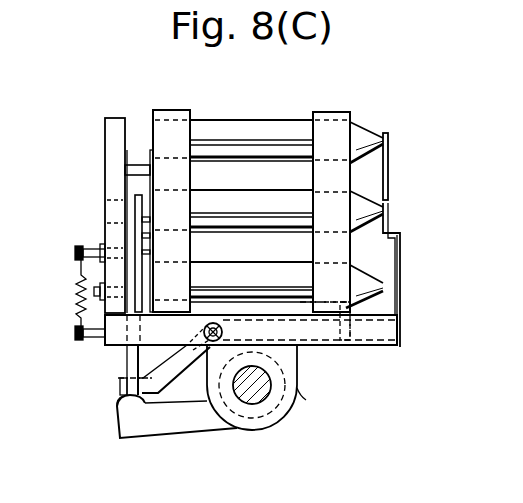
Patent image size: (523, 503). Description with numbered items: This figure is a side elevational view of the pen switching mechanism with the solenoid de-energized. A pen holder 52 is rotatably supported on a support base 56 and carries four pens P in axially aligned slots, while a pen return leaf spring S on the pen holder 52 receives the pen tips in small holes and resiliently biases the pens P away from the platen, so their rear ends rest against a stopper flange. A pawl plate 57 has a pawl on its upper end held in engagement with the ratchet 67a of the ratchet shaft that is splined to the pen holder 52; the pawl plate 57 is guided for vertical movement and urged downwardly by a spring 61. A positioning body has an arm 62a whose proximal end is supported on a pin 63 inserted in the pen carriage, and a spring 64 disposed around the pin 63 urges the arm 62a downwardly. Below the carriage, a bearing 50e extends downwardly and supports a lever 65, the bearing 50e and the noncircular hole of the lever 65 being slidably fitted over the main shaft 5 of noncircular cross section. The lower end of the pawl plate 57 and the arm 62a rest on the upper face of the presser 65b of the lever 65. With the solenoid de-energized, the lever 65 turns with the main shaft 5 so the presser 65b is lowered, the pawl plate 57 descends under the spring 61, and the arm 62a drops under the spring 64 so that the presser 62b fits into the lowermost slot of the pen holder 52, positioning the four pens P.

The pen holder 52 is at (340, 112).
The ratchet 67a is at (136, 165).
The pawl plate 57 is at (133, 232).
The spring 61 is at (78, 290).
The pin 63 is at (215, 322).
The pens P is at (368, 198).
The pen return leaf spring S is at (400, 252).
The support base 56 is at (405, 272).
The arm 62a is at (120, 383).
The presser 62b is at (358, 330).
The presser 65b is at (118, 400).
The bearing 50e is at (297, 398).
The spring 64 is at (200, 347).
The lever 65 is at (168, 422).
The main shaft 5 is at (258, 400).